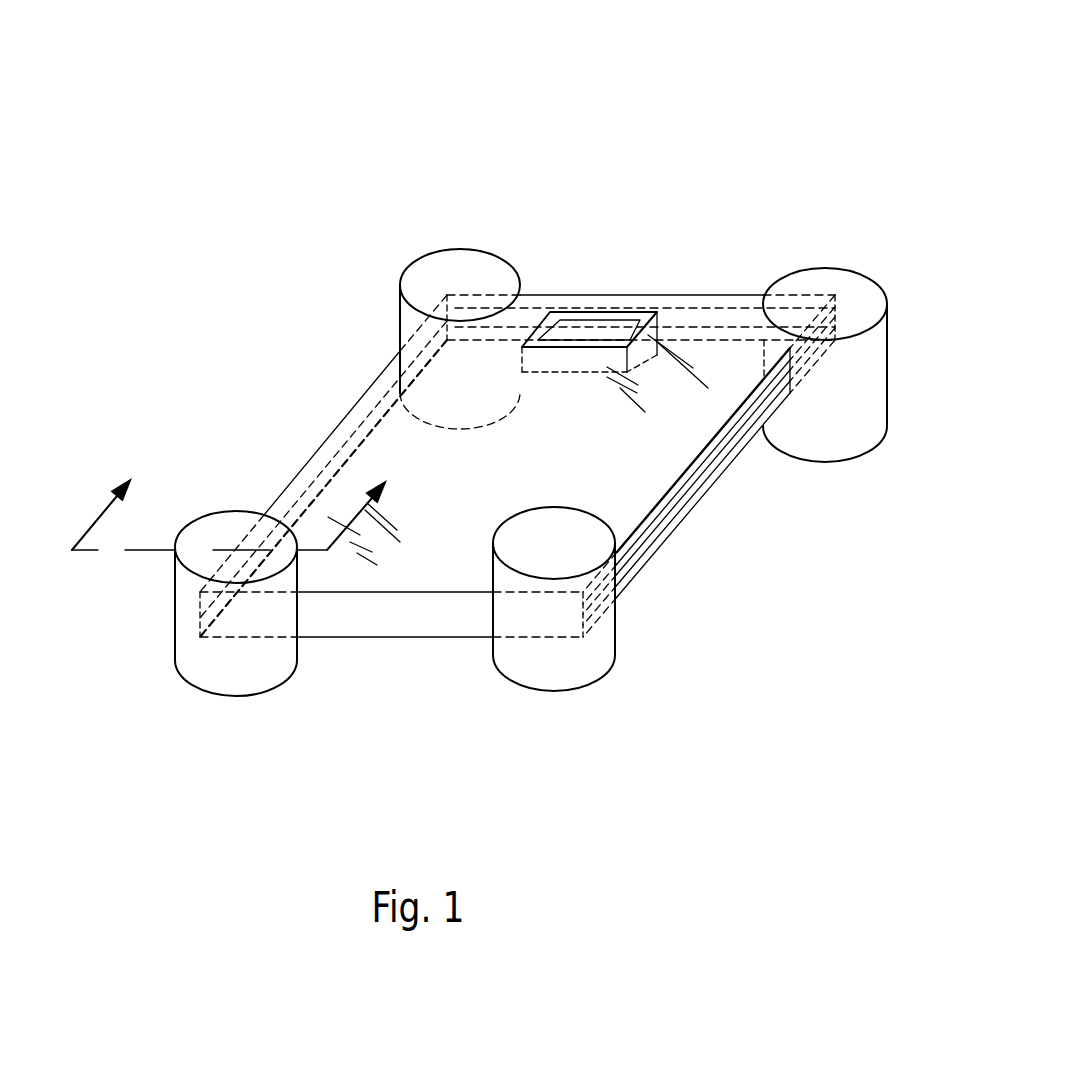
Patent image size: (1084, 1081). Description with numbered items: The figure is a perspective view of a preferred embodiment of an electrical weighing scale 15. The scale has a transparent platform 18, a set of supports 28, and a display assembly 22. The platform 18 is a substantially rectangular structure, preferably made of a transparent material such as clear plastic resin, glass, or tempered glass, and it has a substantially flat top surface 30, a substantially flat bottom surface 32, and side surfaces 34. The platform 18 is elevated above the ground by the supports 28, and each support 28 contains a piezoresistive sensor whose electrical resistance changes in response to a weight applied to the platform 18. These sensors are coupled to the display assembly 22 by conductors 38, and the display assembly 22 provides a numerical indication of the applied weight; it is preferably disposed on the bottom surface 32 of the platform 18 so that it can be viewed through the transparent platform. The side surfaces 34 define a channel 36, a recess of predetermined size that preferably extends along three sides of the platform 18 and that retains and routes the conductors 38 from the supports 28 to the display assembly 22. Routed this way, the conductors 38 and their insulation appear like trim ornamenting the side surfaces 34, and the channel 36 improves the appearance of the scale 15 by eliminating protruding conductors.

The weighing scale 15 is at (618, 135).
The transparent platform 18 is at (448, 657).
The display assembly 22 is at (626, 292).
The supports 28 is at (422, 282).
The top surface 30 is at (390, 572).
The bottom surface 32 is at (420, 638).
The side surfaces 34 is at (300, 466).
The channel 36 is at (657, 543).
The conductors 38 is at (737, 433).